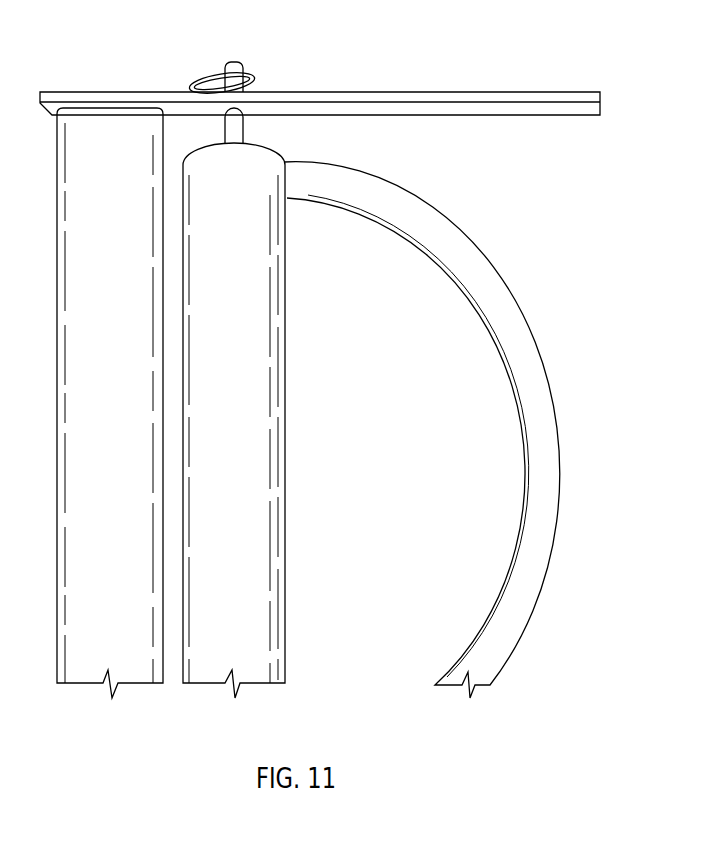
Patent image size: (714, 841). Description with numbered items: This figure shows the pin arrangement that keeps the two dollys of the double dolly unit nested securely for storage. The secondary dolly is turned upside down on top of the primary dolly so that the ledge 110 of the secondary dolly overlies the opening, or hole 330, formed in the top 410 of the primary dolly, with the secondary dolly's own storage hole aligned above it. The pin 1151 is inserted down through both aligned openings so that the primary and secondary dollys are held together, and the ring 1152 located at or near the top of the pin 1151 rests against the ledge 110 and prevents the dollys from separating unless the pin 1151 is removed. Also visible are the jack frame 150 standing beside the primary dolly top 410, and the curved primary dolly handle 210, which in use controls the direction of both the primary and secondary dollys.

The ledge 110 is at (412, 90).
The jack frame 150 is at (113, 121).
The top of the primary dolly 410 is at (264, 368).
The hole 330 is at (276, 156).
The pin 1151 is at (236, 60).
The ring 1152 is at (240, 80).
The primary dolly handle 210 is at (446, 262).